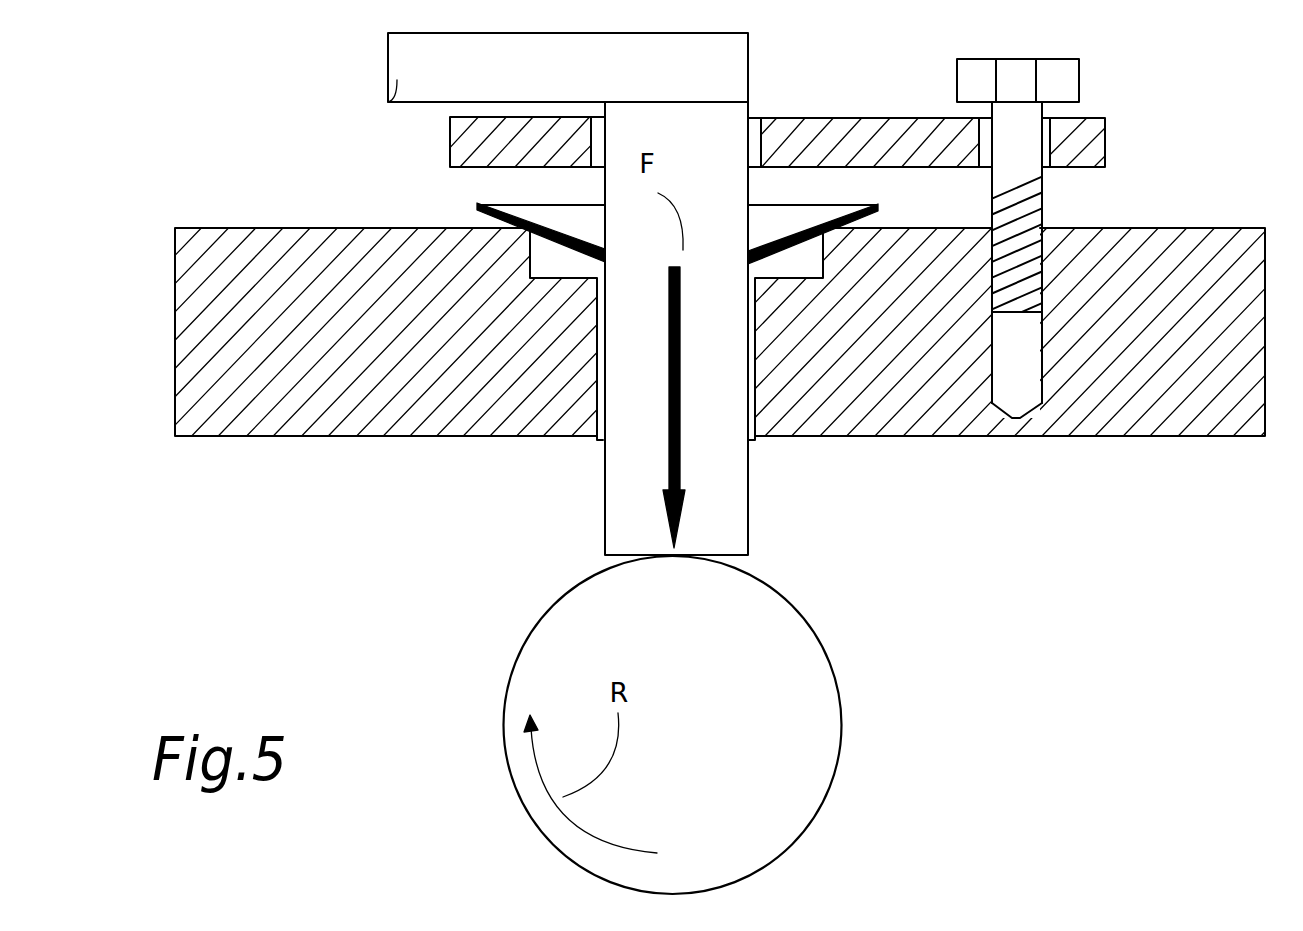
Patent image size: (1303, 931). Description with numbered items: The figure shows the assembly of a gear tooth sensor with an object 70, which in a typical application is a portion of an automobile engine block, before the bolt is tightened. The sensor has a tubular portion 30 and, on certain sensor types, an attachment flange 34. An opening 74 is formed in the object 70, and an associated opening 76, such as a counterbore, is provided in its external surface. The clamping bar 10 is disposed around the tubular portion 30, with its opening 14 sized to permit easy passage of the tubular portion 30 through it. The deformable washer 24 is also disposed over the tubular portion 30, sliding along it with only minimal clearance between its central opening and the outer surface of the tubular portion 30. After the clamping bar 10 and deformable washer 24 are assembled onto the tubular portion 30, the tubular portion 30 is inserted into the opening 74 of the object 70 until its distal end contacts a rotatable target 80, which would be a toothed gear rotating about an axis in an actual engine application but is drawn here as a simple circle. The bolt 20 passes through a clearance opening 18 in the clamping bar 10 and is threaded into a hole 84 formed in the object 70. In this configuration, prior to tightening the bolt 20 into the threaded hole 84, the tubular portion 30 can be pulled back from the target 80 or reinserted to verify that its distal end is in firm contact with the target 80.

The clamping bar 10 is at (450, 168).
The opening 14 is at (753, 127).
The clearance opening 18 is at (988, 162).
The bolt 20 is at (1042, 198).
The deformable washer 24 is at (545, 217).
The tubular portion 30 is at (615, 488).
The attachment flange 34 is at (388, 102).
The object 70 is at (1202, 420).
The opening 74 is at (596, 442).
The associated opening 76 is at (795, 258).
The rotatable target 80 is at (823, 730).
The hole 84 is at (1013, 392).